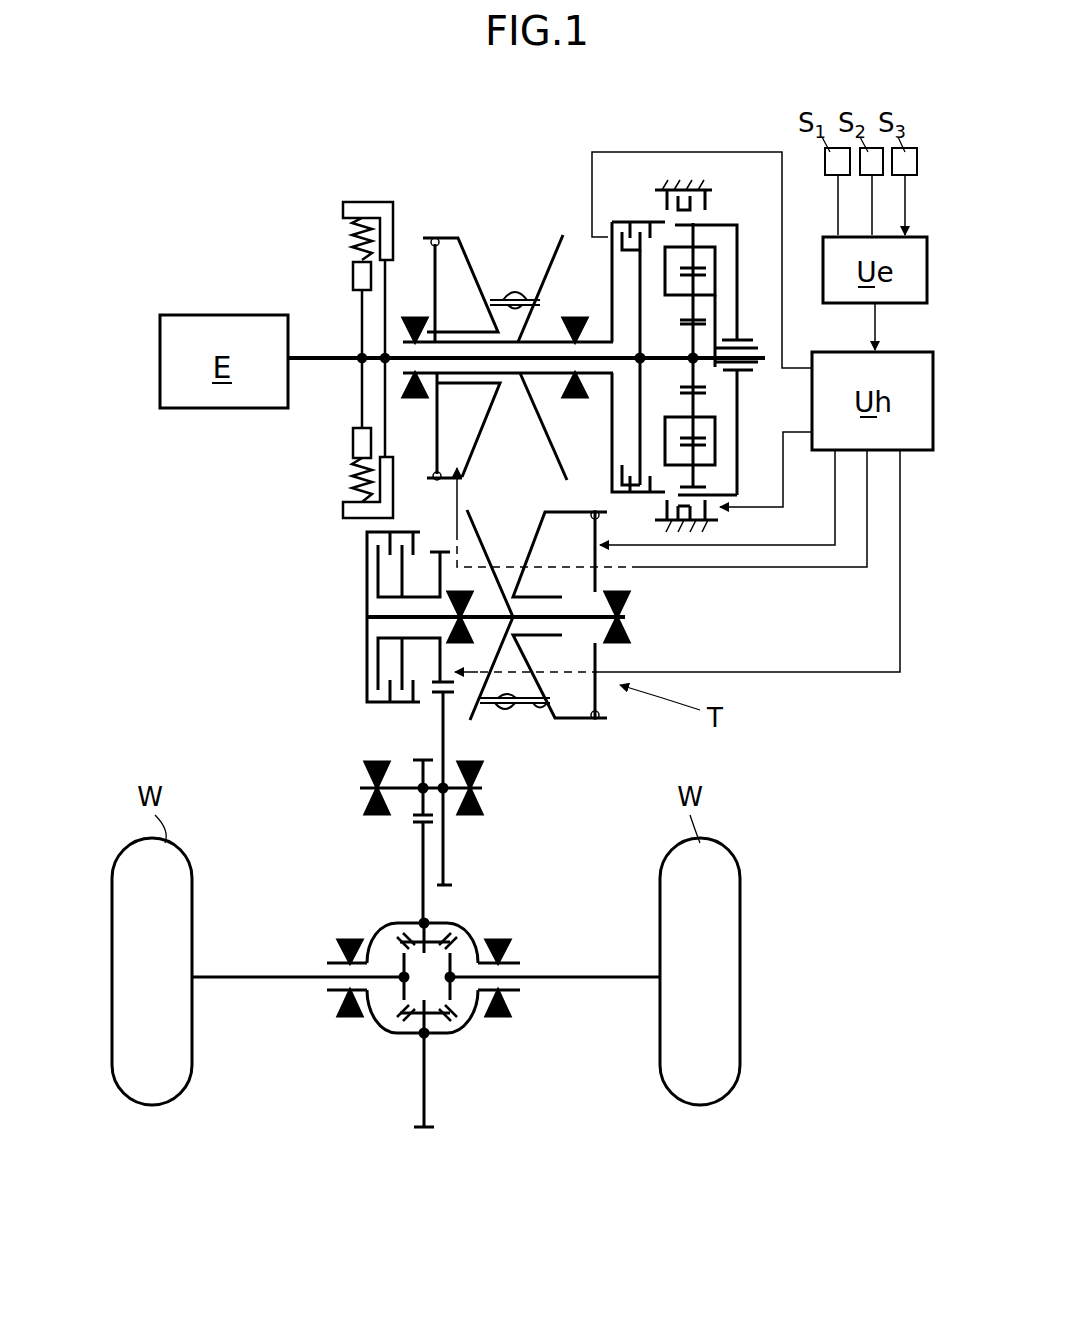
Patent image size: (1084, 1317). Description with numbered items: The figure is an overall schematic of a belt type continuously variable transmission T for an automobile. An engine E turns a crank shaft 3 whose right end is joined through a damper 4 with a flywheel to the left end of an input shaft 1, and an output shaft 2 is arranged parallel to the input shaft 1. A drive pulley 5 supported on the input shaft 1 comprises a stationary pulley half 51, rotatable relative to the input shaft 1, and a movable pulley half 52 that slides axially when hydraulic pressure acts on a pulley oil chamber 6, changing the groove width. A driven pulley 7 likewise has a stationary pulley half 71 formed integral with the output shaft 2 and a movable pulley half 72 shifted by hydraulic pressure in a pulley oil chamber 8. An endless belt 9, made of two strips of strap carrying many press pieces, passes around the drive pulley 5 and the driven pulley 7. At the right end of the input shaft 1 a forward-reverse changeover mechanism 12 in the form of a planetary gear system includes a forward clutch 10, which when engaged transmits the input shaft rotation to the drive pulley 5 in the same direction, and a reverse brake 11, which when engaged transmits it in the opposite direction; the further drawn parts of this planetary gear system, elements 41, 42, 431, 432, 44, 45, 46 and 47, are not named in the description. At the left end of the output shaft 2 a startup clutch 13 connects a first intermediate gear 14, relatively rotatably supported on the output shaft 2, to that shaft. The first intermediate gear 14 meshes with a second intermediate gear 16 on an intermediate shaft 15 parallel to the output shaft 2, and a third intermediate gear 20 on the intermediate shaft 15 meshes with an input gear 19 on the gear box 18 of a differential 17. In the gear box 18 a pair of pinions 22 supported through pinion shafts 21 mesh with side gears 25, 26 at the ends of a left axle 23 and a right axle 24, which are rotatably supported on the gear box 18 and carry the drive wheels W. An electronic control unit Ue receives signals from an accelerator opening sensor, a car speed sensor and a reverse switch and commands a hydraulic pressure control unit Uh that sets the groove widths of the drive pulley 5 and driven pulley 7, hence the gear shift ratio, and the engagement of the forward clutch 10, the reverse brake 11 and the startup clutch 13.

The input shaft 1 is at (763, 352).
The output shaft 2 is at (630, 614).
The crank shaft 3 is at (333, 368).
The damper 4 is at (398, 222).
The drive pulley 5 is at (508, 252).
The stationary pulley half 51 is at (548, 262).
The movable pulley half 52 is at (472, 262).
The pulley oil chamber 6 is at (447, 423).
The driven pulley 7 is at (537, 566).
The stationary pulley half 71 is at (490, 587).
The movable pulley half 72 is at (532, 535).
The pulley oil chamber 8 is at (537, 566).
The endless belt 9 is at (515, 712).
The forward clutch 10 is at (615, 212).
The reverse brake 11 is at (723, 204).
The forward-reverse changeover mechanism 12 is at (752, 377).
The startup clutch 13 is at (362, 606).
The first intermediate gear 14 is at (436, 548).
The intermediate shaft 15 is at (372, 778).
The second intermediate gear 16 is at (432, 690).
The differential 17 is at (419, 957).
The gear box 18 is at (472, 1020).
The input gear 19 is at (432, 1130).
The third intermediate gear 20 is at (418, 760).
The pinion shafts 21 is at (445, 923).
The pinions 22 is at (395, 923).
The left axle 23 is at (275, 982).
The right axle 24 is at (605, 982).
The side gear 25 is at (343, 960).
The side gear 26 is at (480, 935).
The ring gear 41 is at (745, 289).
The planet gear 42 is at (690, 323).
The planet carrier part 431 is at (713, 258).
The planet carrier part 432 is at (665, 268).
The planet gears 44 is at (706, 306).
The brake 45 is at (712, 226).
The brake plates 46 is at (677, 220).
The brake control line 47 is at (740, 443).